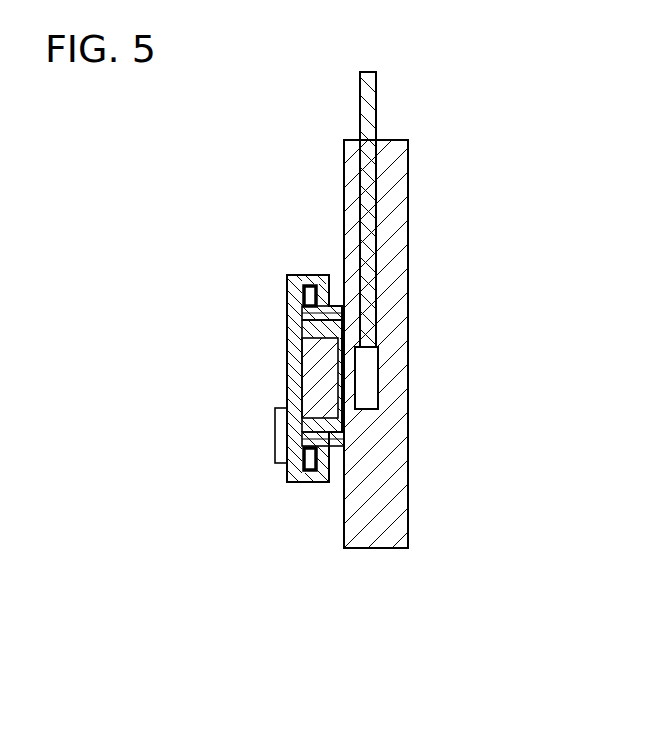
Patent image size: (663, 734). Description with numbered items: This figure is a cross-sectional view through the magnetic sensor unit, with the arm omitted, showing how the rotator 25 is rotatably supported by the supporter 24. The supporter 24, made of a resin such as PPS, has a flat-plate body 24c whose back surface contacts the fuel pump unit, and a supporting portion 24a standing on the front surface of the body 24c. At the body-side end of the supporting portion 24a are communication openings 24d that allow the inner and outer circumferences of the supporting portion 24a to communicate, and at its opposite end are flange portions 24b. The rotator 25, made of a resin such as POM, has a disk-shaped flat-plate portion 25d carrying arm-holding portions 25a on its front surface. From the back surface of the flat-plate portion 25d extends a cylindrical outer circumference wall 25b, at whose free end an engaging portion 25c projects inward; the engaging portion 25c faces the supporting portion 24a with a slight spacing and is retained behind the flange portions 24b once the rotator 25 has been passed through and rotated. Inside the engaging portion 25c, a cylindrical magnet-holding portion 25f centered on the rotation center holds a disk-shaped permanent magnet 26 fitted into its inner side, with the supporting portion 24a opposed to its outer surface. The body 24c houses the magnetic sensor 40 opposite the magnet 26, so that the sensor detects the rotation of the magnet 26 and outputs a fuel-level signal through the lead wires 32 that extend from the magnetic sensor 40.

The supporter 24 is at (423, 211).
The supporting portion 24a is at (298, 330).
The flange portions 24b is at (308, 284).
The body 24c is at (375, 542).
The communication openings 24d is at (340, 303).
The rotator 25 is at (272, 294).
The arm-holding portions 25a is at (292, 358).
The outer circumference wall 25b is at (305, 478).
The engaging portion 25c is at (325, 463).
The flat-plate portion 25d is at (292, 428).
The magnet-holding portion 25f is at (305, 432).
The magnet 26 is at (313, 392).
The lead wires 32 is at (368, 97).
The magnetic sensor 40 is at (372, 358).